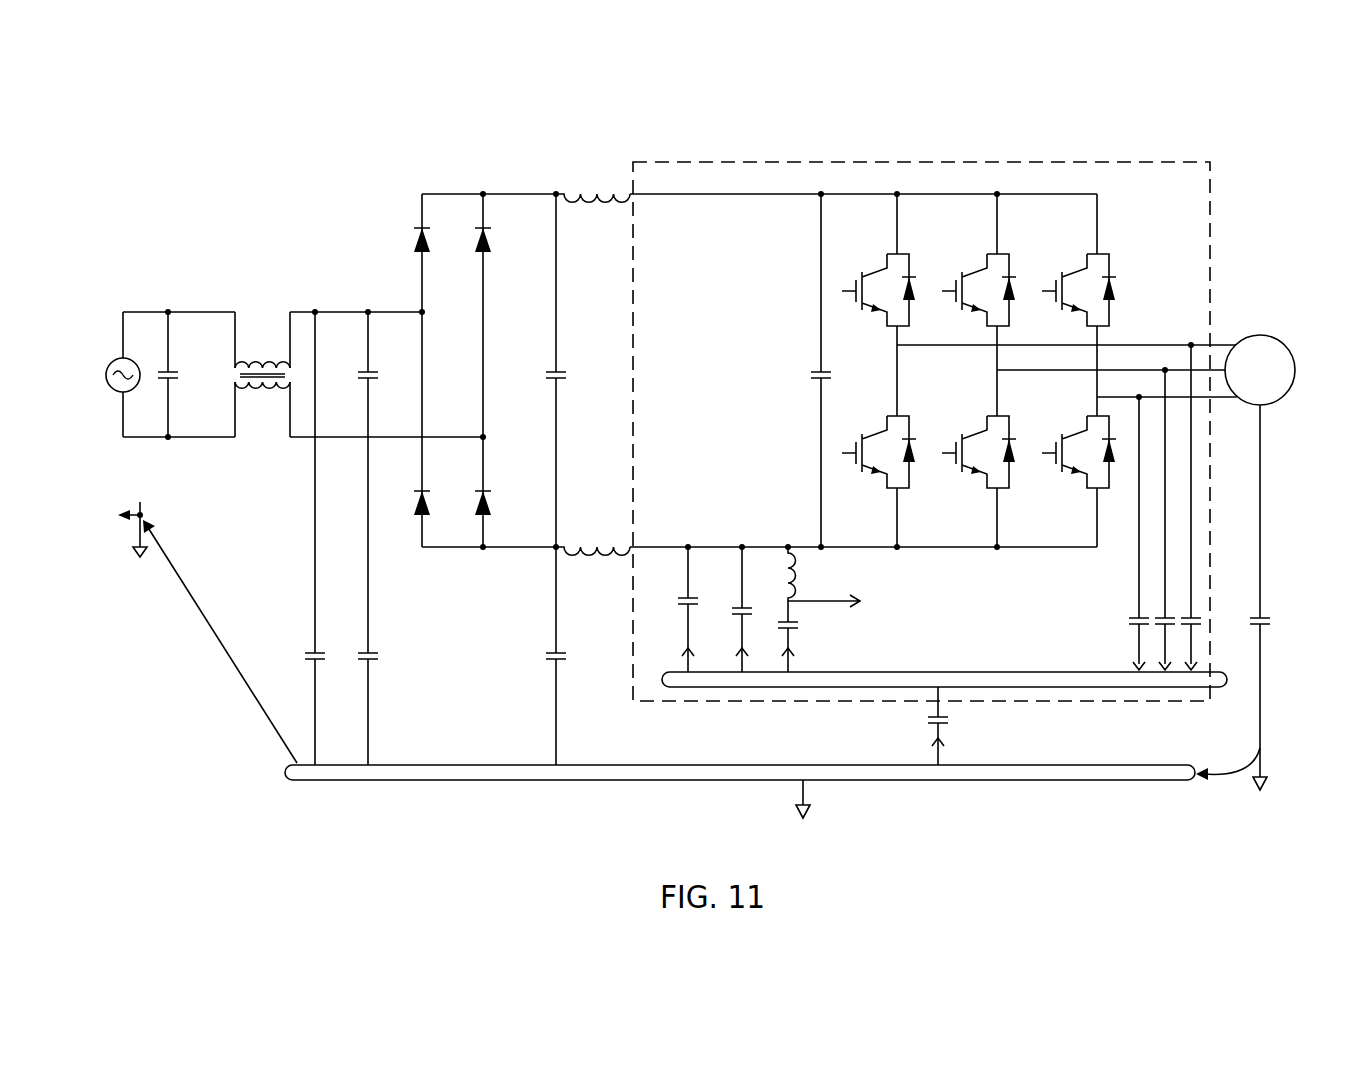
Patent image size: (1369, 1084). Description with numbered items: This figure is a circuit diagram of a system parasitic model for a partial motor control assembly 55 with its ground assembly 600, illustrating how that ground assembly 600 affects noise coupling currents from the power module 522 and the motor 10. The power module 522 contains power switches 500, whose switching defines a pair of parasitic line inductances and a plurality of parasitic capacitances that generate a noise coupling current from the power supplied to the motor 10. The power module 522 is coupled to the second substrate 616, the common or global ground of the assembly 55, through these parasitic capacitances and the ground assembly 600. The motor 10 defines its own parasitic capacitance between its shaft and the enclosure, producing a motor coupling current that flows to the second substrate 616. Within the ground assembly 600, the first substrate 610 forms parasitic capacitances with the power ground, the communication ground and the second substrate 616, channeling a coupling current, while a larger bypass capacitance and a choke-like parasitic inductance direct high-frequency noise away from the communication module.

The motor control assembly 55 is at (250, 152).
The power module 522 is at (657, 152).
The power switches 500 is at (878, 238).
The motor 10 is at (1282, 338).
The ground assembly 600 is at (636, 664).
The first substrate 610 is at (1229, 675).
The second substrate 616 is at (1090, 782).